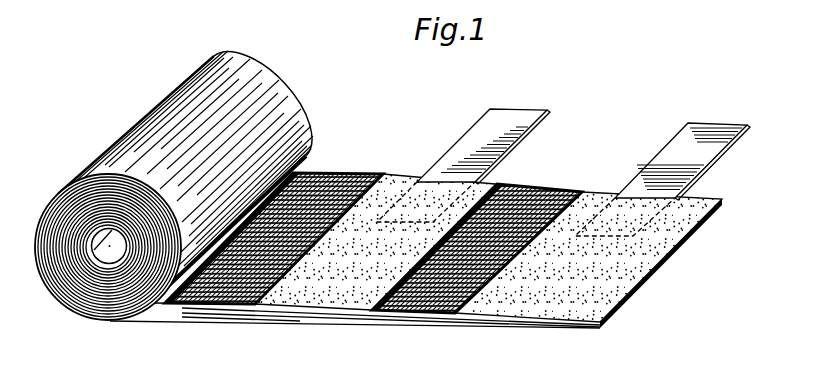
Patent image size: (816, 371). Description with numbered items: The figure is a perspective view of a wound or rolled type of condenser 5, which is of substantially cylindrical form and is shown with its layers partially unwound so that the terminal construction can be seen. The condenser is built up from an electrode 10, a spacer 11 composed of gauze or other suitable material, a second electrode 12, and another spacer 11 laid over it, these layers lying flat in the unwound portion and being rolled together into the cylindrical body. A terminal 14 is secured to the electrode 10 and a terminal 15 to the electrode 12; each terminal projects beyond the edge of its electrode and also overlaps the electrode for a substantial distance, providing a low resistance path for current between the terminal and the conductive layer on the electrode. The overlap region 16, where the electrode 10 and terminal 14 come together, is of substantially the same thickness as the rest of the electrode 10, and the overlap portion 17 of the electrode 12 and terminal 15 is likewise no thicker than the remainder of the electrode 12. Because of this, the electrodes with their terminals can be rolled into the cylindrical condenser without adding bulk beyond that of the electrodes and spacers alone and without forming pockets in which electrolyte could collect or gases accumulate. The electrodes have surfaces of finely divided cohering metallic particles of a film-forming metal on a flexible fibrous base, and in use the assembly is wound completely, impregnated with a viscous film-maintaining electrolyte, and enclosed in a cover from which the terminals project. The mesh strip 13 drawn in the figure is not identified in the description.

The condenser 5 is at (95, 158).
The electrode 10 is at (617, 277).
The spacer 11 is at (438, 285).
The electrode 12 is at (331, 280).
The mesh strip 13 is at (218, 275).
The terminal 14 is at (713, 140).
The terminal 15 is at (518, 118).
The overlap region 16 is at (620, 222).
The overlap portion 17 is at (418, 207).